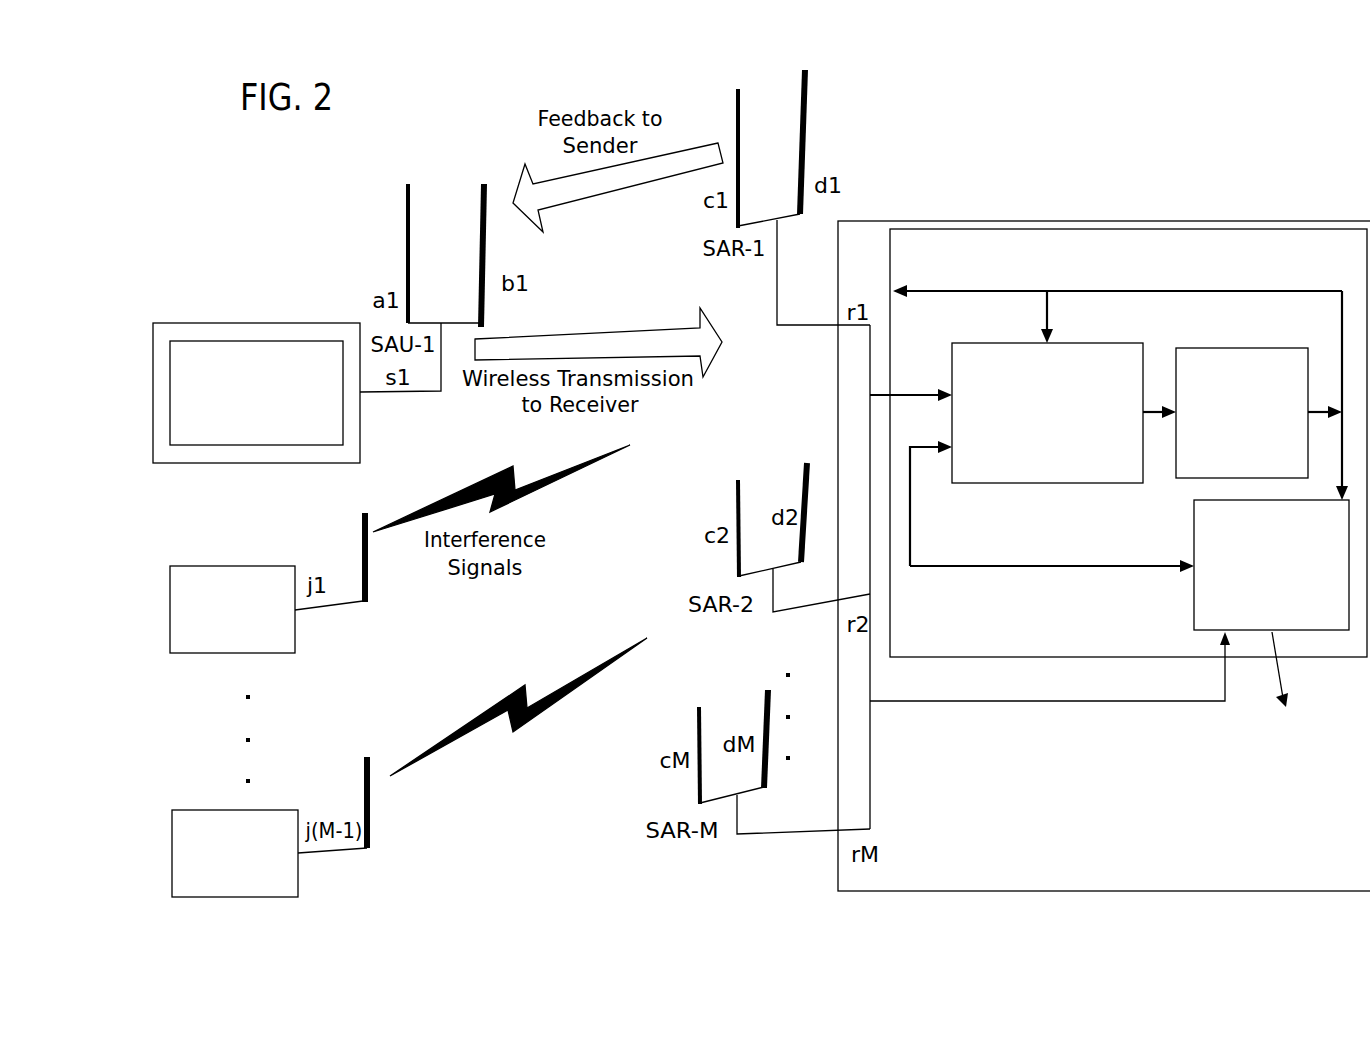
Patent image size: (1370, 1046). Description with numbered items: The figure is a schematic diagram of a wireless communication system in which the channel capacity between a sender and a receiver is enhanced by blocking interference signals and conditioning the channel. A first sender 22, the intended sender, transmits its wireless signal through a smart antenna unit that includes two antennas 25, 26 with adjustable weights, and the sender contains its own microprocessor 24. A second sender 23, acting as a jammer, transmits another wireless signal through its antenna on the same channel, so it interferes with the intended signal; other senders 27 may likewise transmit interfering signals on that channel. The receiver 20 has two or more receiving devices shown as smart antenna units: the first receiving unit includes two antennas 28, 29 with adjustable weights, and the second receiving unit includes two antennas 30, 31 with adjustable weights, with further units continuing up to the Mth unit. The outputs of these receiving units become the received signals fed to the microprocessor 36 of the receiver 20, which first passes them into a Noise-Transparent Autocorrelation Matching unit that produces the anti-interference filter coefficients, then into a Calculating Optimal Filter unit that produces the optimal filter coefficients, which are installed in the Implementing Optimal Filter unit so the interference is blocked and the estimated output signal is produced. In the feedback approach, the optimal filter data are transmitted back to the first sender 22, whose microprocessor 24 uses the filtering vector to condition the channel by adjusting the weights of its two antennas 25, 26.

The receiver 20 is at (1268, 220).
The first sender 22 is at (309, 322).
The second sender 23 is at (283, 566).
The microprocessor 24 is at (343, 418).
The antenna 25 is at (405, 208).
The antenna 26 is at (482, 199).
The other senders 27 is at (380, 708).
The antenna 28 is at (737, 100).
The antenna 29 is at (812, 96).
The antenna 30 is at (737, 505).
The antenna 31 is at (803, 468).
The microprocessor 36 is at (1042, 229).